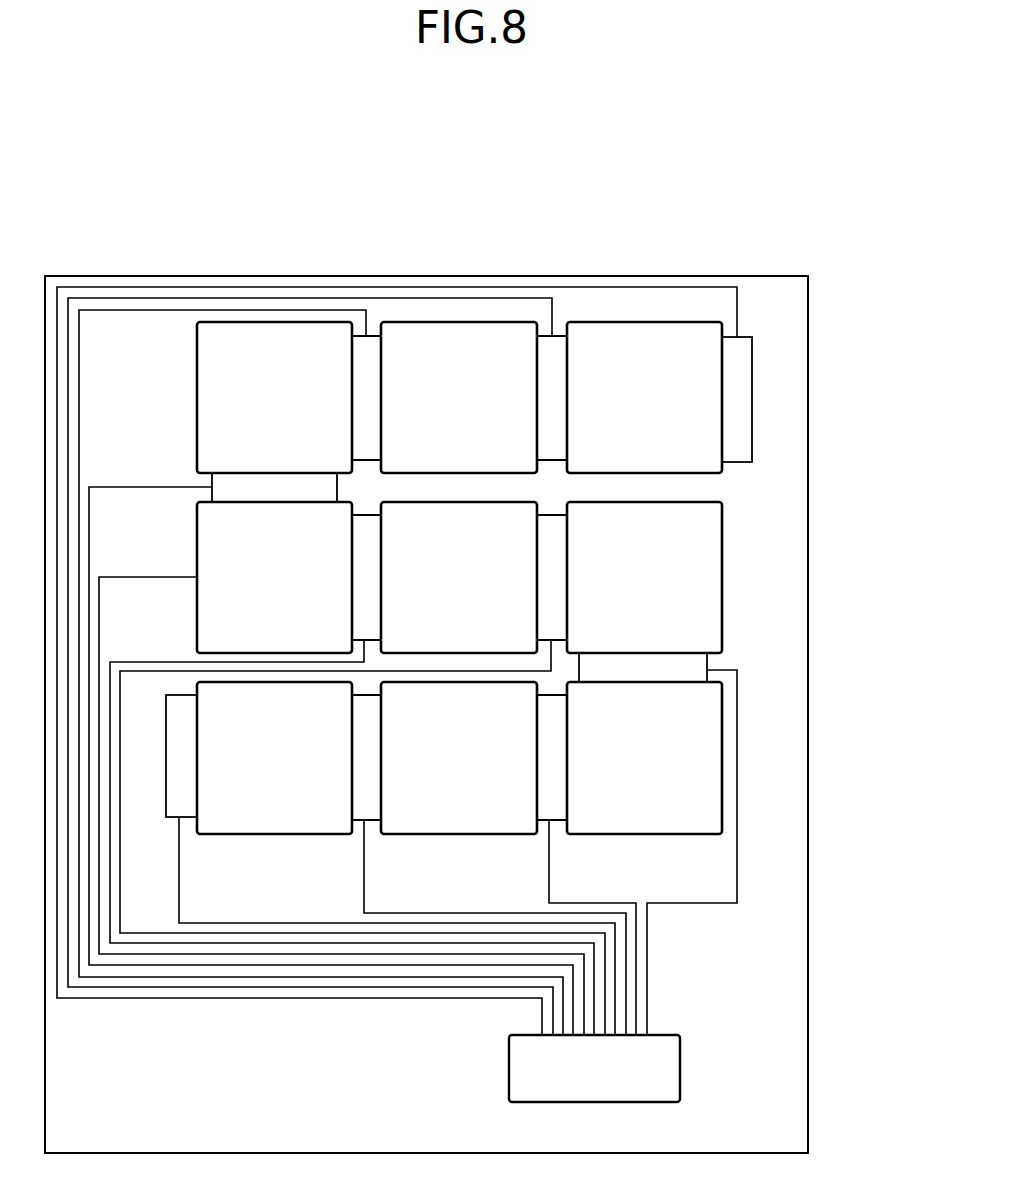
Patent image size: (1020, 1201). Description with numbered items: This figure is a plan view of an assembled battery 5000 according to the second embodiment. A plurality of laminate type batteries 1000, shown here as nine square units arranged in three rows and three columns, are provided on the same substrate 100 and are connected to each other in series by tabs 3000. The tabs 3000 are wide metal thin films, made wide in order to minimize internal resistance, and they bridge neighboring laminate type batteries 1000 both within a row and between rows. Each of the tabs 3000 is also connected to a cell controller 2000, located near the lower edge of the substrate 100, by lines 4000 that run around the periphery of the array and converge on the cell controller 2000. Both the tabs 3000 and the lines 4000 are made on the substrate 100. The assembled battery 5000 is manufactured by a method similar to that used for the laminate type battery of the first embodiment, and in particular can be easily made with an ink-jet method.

The assembled battery 5000 is at (132, 248).
The substrate 100 is at (270, 276).
The laminate type battery 1000 is at (197, 397).
The cell controller 2000 is at (681, 1072).
The tab 3000 is at (752, 397).
The line 4000 is at (268, 1000).